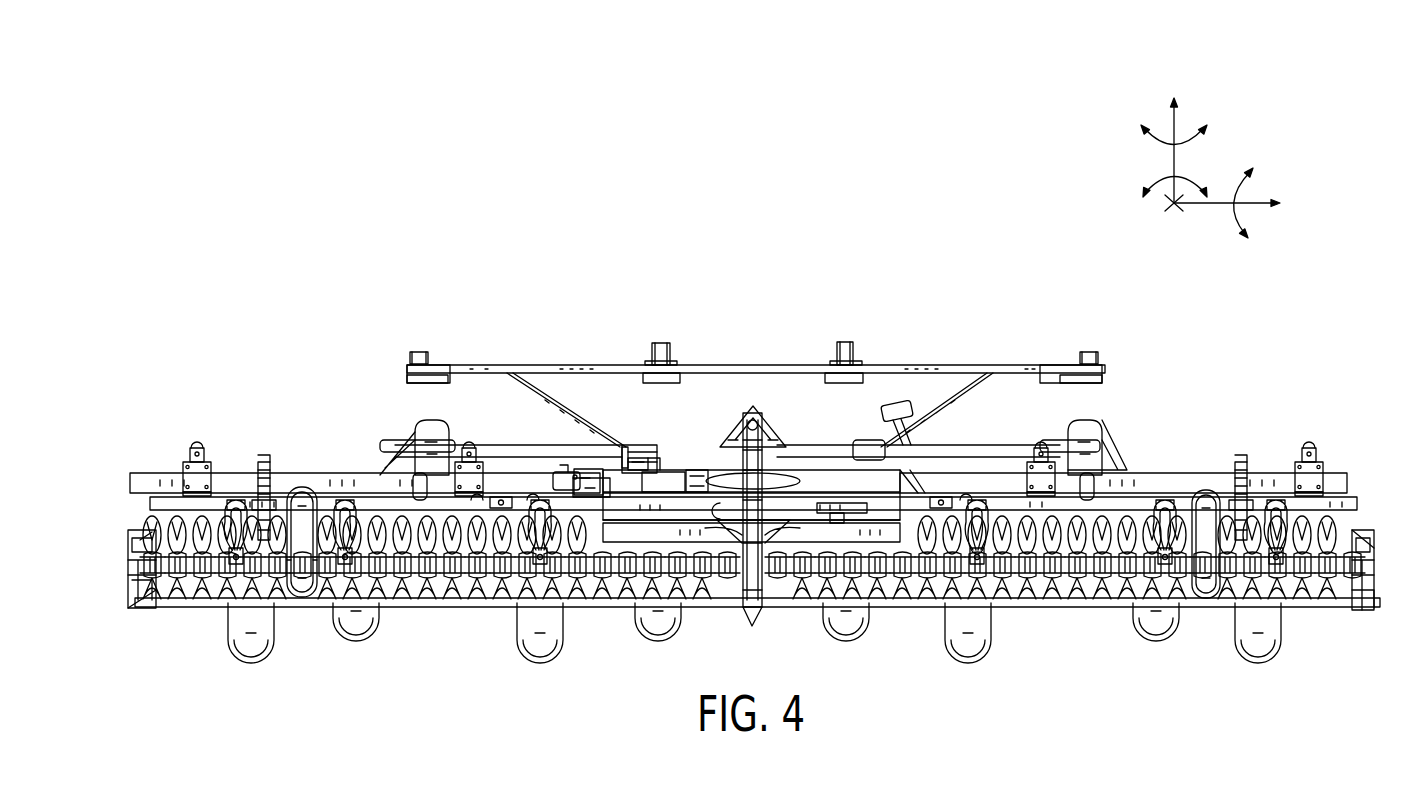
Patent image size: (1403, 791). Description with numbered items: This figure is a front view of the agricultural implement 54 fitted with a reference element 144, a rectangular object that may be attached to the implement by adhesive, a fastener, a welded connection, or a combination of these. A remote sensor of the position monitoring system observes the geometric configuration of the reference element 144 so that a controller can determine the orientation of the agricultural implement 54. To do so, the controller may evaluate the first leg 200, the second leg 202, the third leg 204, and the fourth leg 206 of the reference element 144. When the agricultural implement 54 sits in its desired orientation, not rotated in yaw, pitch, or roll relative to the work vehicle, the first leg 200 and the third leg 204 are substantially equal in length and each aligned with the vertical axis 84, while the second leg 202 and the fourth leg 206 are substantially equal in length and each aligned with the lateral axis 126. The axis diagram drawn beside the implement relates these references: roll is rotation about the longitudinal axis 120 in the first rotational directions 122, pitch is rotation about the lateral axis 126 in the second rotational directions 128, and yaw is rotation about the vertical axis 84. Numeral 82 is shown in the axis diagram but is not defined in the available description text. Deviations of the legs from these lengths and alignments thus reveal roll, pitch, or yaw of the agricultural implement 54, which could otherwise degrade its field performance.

The agricultural implement 54 is at (372, 316).
The reference element 144 is at (634, 451).
The first leg 200 is at (573, 487).
The second leg 202 is at (655, 472).
The third leg 204 is at (690, 488).
The fourth leg 206 is at (658, 492).
The vertical axis 84 is at (1168, 128).
The yaw rotation 82 is at (1192, 147).
The first rotational directions 122 is at (1155, 176).
The longitudinal axis 120 is at (1170, 212).
The lateral axis 126 is at (1250, 208).
The second rotational directions 128 is at (1233, 218).